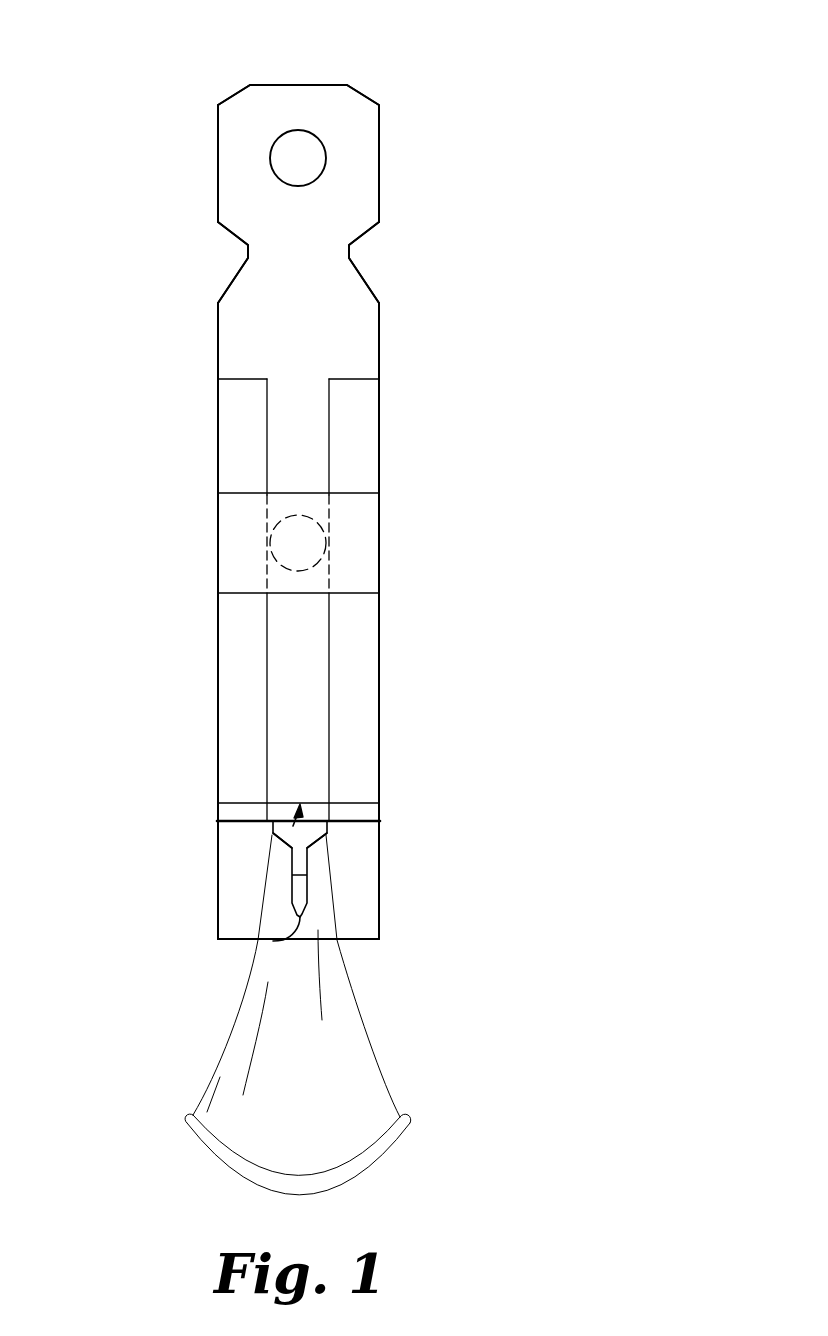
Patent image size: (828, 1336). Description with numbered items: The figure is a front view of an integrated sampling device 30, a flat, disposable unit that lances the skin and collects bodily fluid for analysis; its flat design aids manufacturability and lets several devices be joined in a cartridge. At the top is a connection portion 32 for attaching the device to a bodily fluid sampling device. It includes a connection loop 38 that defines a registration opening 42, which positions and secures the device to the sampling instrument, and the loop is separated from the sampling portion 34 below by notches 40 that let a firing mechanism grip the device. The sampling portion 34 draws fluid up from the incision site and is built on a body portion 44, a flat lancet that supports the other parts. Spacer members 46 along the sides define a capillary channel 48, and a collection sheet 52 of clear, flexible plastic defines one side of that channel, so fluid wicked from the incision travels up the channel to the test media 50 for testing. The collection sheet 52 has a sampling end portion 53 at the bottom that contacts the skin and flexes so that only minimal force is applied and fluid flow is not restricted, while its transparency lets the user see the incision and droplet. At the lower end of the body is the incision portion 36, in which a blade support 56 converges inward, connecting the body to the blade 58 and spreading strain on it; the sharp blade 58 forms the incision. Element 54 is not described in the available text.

The integrated sampling device 30 is at (583, 90).
The connection portion 32 is at (381, 178).
The sampling portion 34 is at (381, 613).
The incision portion 36 is at (308, 863).
The connection loop 38 is at (293, 153).
The notches 40 is at (247, 254).
The registration opening 42 is at (217, 154).
The body portion 44 is at (217, 352).
The spacer members 46 is at (217, 685).
The capillary channel 48 is at (308, 733).
The test media 50 is at (237, 535).
The collection sheet 52 is at (228, 838).
The sampling end portion 53 is at (235, 1010).
The left shoulder 54 is at (320, 833).
The blade support 56 is at (337, 847).
The blade 58 is at (275, 941).